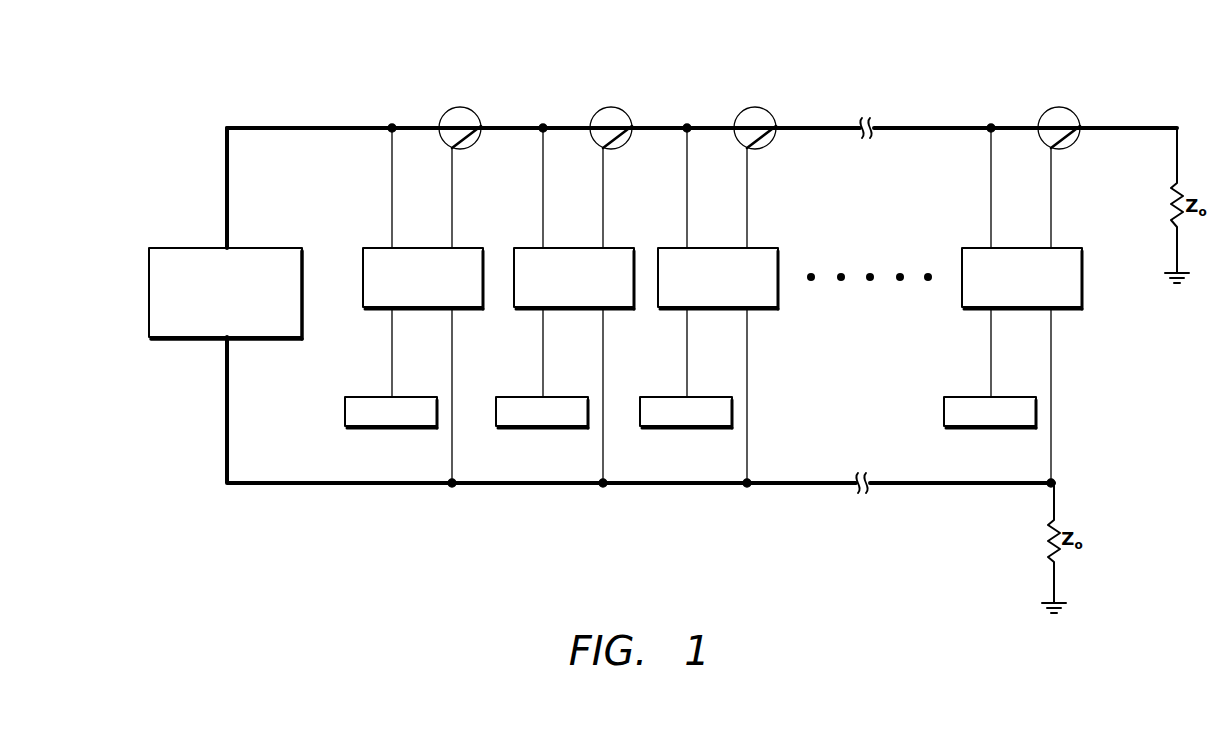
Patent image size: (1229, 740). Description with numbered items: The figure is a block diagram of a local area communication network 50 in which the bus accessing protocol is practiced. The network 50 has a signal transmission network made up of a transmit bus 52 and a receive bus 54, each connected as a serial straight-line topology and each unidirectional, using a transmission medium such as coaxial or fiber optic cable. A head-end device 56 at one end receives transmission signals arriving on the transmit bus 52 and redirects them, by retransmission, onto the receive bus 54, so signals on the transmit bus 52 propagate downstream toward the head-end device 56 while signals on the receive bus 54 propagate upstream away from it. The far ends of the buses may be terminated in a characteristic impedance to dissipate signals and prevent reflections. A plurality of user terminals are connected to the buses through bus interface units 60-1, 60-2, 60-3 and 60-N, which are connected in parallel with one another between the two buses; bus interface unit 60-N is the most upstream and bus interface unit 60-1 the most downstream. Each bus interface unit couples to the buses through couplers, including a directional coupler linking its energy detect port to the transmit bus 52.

The local area communication network 50 is at (158, 550).
The transmit bus 52 is at (303, 127).
The receive bus 54 is at (325, 488).
The head-end device 56 is at (168, 247).
The bus interface unit 60-1 is at (388, 309).
The bus interface unit 60-2 is at (539, 309).
The bus interface unit 60-3 is at (683, 309).
The bus interface unit 60-N is at (986, 309).